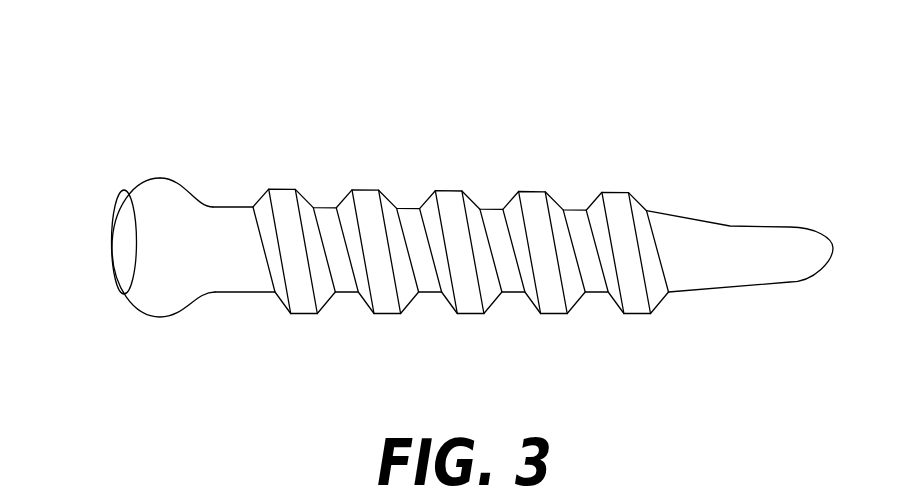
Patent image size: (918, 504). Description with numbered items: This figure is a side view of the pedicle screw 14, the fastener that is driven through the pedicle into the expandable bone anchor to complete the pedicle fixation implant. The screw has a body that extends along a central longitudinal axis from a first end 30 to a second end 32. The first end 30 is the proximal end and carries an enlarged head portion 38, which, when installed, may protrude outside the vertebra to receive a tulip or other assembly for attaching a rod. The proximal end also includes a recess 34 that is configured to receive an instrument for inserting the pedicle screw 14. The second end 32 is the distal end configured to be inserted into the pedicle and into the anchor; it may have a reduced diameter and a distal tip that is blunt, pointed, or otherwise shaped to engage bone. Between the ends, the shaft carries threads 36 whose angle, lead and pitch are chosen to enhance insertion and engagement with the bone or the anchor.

The pedicle screw 14 is at (217, 127).
The first end 30 is at (127, 190).
The second end 32 is at (827, 237).
The recess 34 is at (120, 250).
The thread 36 is at (442, 190).
The head portion 38 is at (143, 188).